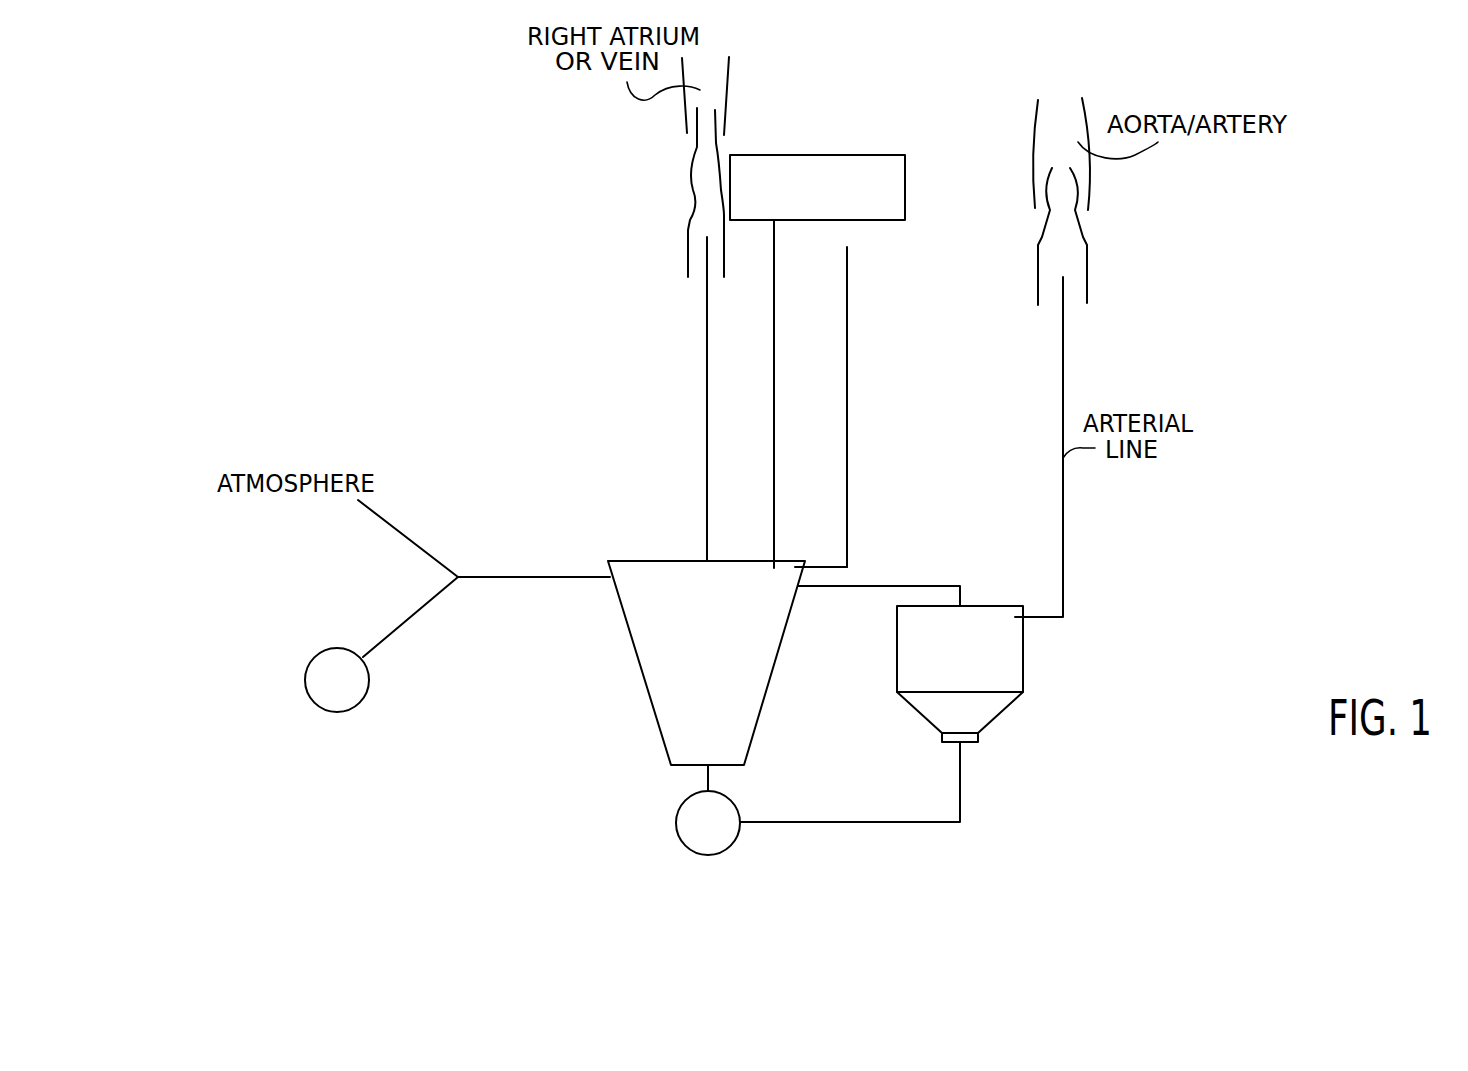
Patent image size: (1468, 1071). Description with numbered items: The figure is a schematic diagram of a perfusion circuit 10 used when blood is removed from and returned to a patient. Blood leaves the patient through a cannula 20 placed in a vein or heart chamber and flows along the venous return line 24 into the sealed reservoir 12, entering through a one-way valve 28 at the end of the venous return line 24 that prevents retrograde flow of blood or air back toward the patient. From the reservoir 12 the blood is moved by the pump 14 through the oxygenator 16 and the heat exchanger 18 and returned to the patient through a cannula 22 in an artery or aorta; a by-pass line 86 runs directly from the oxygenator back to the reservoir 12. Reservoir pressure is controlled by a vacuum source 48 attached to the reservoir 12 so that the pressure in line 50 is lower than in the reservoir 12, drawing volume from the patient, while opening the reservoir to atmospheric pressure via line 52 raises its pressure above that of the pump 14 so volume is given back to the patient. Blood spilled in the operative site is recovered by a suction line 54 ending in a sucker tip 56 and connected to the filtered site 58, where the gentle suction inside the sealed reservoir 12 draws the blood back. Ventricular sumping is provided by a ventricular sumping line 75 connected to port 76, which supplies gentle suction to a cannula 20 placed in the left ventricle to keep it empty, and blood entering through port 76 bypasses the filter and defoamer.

The perfusion circuit 10 is at (1128, 800).
The sealed reservoir 12 is at (775, 619).
The pump 14 is at (688, 835).
The oxygenator 16 is at (912, 659).
The heat exchanger 18 is at (977, 715).
The cannula 20 is at (695, 217).
The cannula 22 is at (1075, 258).
The venous return line 24 is at (707, 465).
The one-way valve 28 is at (707, 561).
The vacuum source 48 is at (307, 667).
The line 50 is at (403, 623).
The atmospheric vent line 52 is at (410, 537).
The suction line 54 is at (848, 423).
The sucker tip 56 is at (847, 250).
The site 58 is at (805, 567).
The ventricular sumping line 75 is at (774, 392).
The port 76 is at (773, 560).
The by-pass line 86 is at (918, 586).